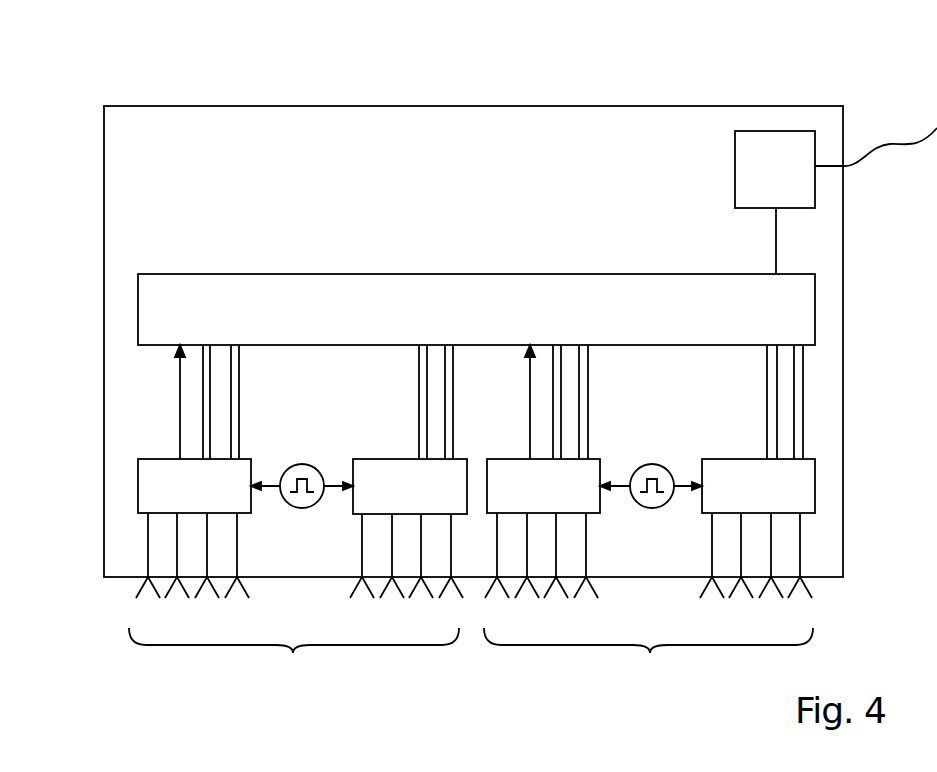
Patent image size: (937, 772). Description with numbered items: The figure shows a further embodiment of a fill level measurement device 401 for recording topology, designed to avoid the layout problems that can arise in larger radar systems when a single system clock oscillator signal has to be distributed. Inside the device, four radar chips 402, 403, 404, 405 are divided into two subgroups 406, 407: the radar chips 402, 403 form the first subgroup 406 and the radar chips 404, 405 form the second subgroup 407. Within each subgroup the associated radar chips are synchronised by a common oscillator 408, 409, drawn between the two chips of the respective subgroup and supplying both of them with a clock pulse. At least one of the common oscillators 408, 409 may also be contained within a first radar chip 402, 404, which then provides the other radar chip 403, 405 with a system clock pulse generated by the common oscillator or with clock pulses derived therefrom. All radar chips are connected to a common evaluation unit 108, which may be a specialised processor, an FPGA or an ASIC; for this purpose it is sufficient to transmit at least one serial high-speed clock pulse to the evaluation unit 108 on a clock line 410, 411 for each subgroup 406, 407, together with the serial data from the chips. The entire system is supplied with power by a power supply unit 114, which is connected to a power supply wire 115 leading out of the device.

The fill level measurement device 401 is at (393, 106).
The evaluation unit 108 is at (372, 274).
The power supply unit 114 is at (735, 158).
The power supply wire 115 is at (890, 146).
The radar chip 402 is at (138, 487).
The radar chip 403 is at (353, 506).
The radar chip 404 is at (600, 506).
The radar chip 405 is at (815, 475).
The common oscillator 408 is at (302, 464).
The common oscillator 409 is at (650, 464).
The clock line 410 is at (180, 385).
The clock line 411 is at (530, 400).
The subgroup 406 is at (294, 658).
The subgroup 407 is at (648, 658).